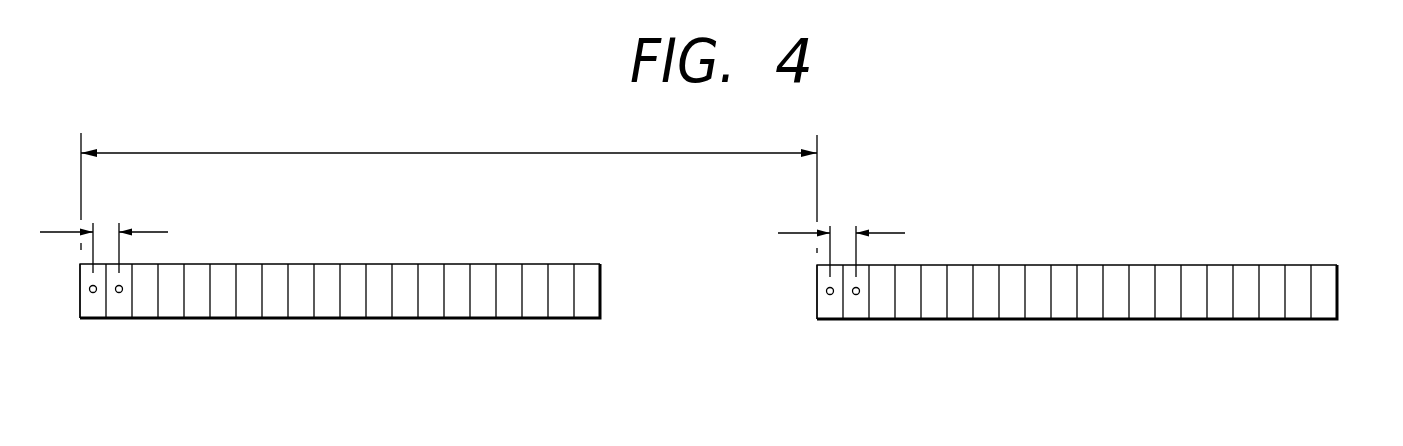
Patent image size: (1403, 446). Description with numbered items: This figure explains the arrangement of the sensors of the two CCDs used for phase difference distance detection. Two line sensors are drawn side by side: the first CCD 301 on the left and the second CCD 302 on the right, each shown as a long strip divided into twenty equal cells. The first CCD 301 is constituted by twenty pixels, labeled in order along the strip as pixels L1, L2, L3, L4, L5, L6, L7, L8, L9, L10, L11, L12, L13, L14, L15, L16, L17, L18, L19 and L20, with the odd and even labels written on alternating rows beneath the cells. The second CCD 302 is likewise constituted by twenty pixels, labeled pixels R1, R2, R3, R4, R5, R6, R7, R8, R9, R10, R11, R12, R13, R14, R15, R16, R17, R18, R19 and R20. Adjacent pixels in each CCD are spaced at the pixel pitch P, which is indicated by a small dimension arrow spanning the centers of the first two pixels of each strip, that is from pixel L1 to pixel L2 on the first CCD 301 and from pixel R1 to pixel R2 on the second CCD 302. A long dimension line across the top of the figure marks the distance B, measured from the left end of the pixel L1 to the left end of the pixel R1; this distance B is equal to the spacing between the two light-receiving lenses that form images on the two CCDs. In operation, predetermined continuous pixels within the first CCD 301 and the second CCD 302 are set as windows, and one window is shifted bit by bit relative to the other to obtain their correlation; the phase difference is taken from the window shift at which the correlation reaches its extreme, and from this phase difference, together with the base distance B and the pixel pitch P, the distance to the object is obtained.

The first CCD 301 is at (590, 263).
The second CCD 302 is at (1326, 265).
The distance from the left end of pixel L1 to the left end of pixel R1 B is at (449, 188).
The pixel pitch P is at (472, 239).
The pixel L1 is at (92, 307).
The pixel L2 is at (117, 321).
The pixel L3 is at (143, 307).
The pixel L4 is at (169, 321).
The pixel L5 is at (195, 307).
The pixel L6 is at (220, 321).
The pixel L7 is at (246, 307).
The pixel L8 is at (271, 321).
The pixel L9 is at (297, 307).
The pixel L10 is at (327, 321).
The pixel L11 is at (353, 307).
The pixel L12 is at (378, 321).
The pixel L13 is at (404, 307).
The pixel L14 is at (429, 321).
The pixel L15 is at (455, 307).
The pixel L16 is at (480, 321).
The pixel L17 is at (506, 307).
The pixel L18 is at (531, 321).
The pixel L19 is at (557, 307).
The pixel L20 is at (582, 321).
The pixel R1 is at (831, 308).
The pixel R2 is at (857, 323).
The pixel R3 is at (882, 308).
The pixel R4 is at (908, 323).
The pixel R5 is at (934, 308).
The pixel R6 is at (960, 323).
The pixel R7 is at (985, 308).
The pixel R8 is at (1011, 323).
The pixel R9 is at (1036, 308).
The pixel R10 is at (1068, 323).
The pixel R11 is at (1093, 308).
The pixel R12 is at (1119, 323).
The pixel R13 is at (1144, 308).
The pixel R14 is at (1170, 323).
The pixel R15 is at (1195, 308).
The pixel R16 is at (1221, 323).
The pixel R17 is at (1246, 308).
The pixel R18 is at (1272, 323).
The pixel R19 is at (1297, 308).
The pixel R20 is at (1323, 323).